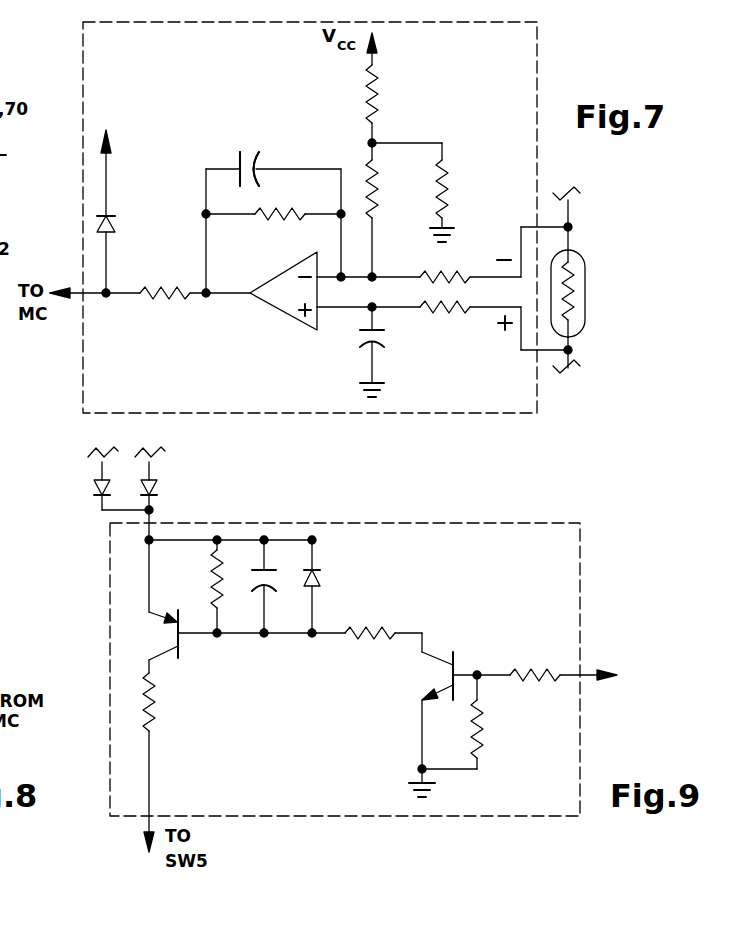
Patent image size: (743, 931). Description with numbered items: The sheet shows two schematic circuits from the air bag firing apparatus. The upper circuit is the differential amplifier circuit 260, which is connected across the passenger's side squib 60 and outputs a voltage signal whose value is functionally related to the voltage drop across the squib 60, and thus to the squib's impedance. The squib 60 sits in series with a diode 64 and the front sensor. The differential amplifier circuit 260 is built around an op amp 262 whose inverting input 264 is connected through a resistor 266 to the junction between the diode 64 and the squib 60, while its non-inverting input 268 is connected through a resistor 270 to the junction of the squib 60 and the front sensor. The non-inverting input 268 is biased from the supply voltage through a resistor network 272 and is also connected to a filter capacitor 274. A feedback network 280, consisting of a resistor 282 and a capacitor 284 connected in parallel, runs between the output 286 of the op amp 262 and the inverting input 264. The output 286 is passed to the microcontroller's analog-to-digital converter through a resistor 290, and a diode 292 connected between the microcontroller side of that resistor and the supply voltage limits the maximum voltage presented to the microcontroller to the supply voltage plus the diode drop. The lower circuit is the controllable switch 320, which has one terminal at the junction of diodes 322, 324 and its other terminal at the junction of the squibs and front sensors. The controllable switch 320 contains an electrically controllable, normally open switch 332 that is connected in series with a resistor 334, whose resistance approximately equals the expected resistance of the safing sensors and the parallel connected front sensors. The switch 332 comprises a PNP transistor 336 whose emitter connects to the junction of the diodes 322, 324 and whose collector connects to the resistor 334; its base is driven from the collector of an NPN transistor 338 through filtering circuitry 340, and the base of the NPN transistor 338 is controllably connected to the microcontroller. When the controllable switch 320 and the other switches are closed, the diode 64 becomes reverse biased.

In FIG. 7, the differential amplifier circuit 260 is at (537, 90).
In FIG. 7, the op amp 262 is at (288, 290).
In FIG. 7, the inverting input 264 is at (345, 288).
In FIG. 7, the resistor 266 is at (455, 268).
In FIG. 7, the non-inverting input 268 is at (318, 308).
In FIG. 7, the resistor 270 is at (455, 315).
In FIG. 7, the resistor network 272 is at (340, 124).
In FIG. 7, the filter capacitor 274 is at (382, 338).
In FIG. 7, the feedback network 280 is at (242, 139).
In FIG. 7, the resistor 282 is at (288, 222).
In FIG. 7, the capacitor 284 is at (262, 174).
In FIG. 7, the output 286 is at (250, 294).
In FIG. 7, the resistor 290 is at (157, 305).
In FIG. 7, the diode 292 is at (116, 226).
In FIG. 7, the passenger's side squib 60 is at (577, 258).
In FIG. 7, the diode 64 is at (583, 196).
In FIG. 9, the controllable switch 320 is at (447, 520).
In FIG. 9, the diode 322 is at (92, 486).
In FIG. 9, the diode 324 is at (157, 486).
In FIG. 9, the normally open switch 332 is at (288, 677).
In FIG. 9, the resistor 334 is at (157, 700).
In FIG. 9, the PNP transistor 336 is at (160, 632).
In FIG. 9, the NPN transistor 338 is at (432, 676).
In FIG. 9, the filtering circuitry 340 is at (305, 522).